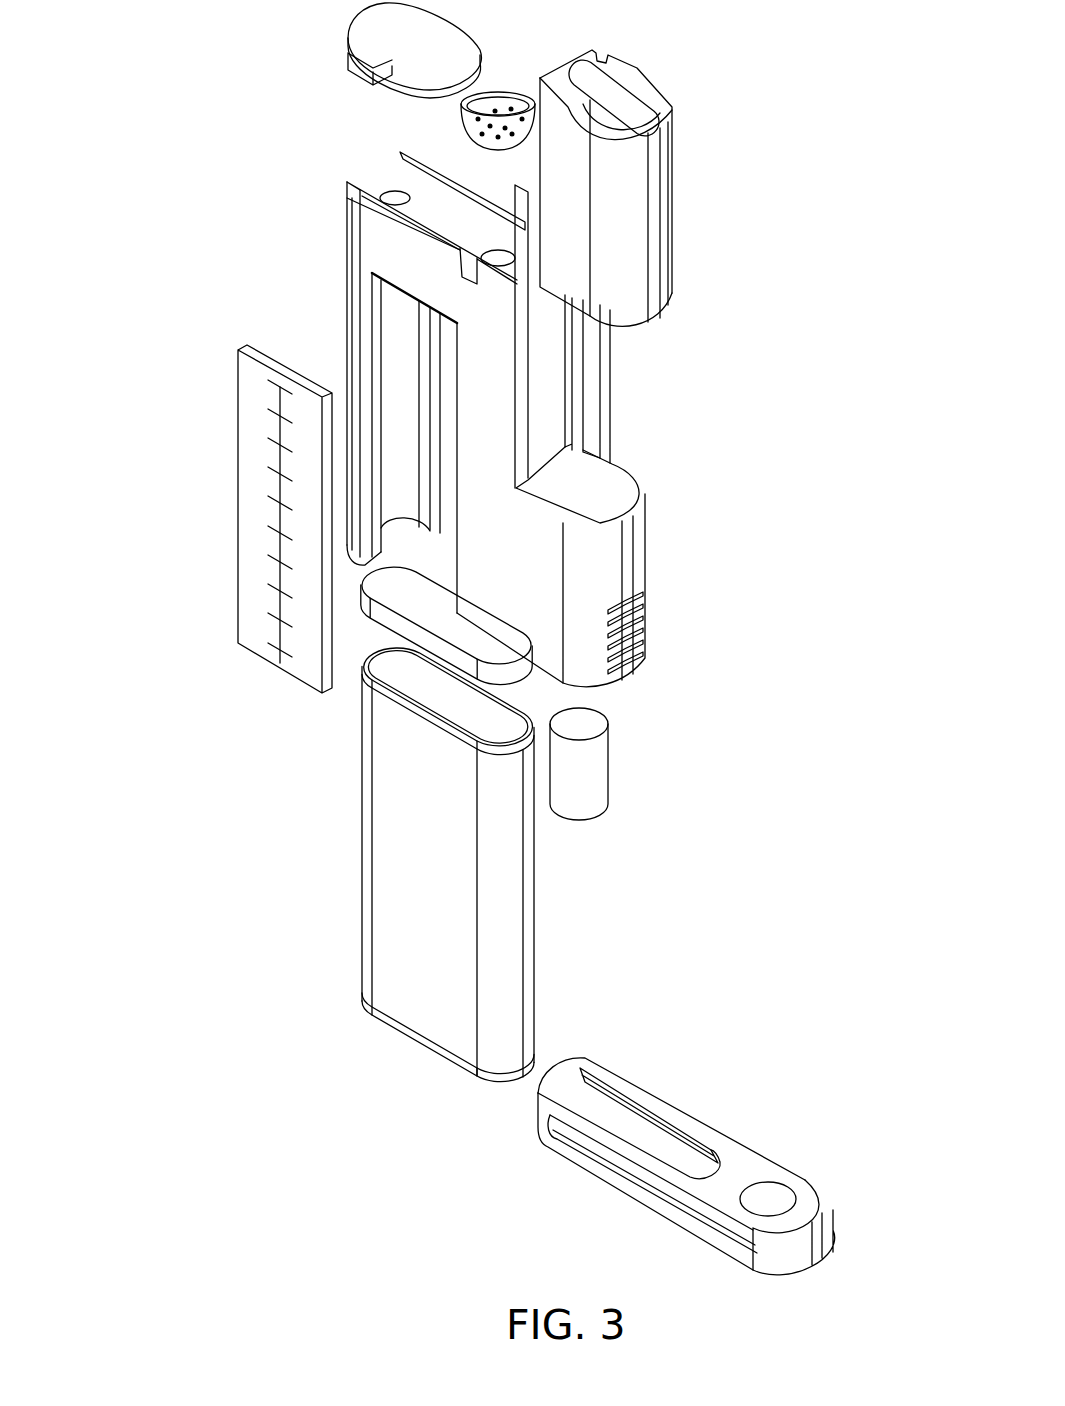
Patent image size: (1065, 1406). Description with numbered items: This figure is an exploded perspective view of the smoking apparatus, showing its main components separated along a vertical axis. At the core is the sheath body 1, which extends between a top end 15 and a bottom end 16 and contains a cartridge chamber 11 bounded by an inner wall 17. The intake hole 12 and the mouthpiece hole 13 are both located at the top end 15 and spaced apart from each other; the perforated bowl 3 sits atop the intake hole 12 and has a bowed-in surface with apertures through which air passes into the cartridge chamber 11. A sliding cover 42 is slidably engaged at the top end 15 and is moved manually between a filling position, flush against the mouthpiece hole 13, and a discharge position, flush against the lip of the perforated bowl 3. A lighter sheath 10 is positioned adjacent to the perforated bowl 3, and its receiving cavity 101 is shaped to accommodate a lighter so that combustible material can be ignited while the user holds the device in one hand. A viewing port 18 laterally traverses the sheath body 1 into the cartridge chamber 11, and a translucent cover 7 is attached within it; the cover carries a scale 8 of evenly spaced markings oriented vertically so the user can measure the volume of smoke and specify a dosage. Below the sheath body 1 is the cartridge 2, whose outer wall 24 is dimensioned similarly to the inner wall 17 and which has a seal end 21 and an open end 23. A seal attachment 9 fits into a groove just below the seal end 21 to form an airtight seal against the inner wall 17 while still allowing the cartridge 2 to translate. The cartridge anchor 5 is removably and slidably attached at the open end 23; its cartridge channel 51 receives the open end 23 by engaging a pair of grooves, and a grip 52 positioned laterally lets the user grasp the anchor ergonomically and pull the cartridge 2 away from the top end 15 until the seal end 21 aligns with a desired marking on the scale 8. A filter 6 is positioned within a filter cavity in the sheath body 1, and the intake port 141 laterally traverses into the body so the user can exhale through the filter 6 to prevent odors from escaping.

The sheath body 1 is at (384, 361).
The cartridge 2 is at (421, 912).
The perforated bowl 3 is at (503, 102).
The cartridge anchor 5 is at (681, 1126).
The filter 6 is at (600, 778).
The translucent cover 7 is at (416, 494).
The scale 8 is at (278, 563).
The seal attachment 9 is at (415, 609).
The lighter sheath 10 is at (662, 188).
The cartridge chamber 11 is at (433, 398).
The intake hole 12 is at (500, 252).
The mouthpiece hole 13 is at (393, 197).
The top end 15 is at (349, 361).
The bottom end 16 is at (620, 581).
The inner wall 17 is at (388, 322).
The viewing port 18 is at (450, 566).
The seal end 21 is at (348, 690).
The open end 23 is at (350, 1036).
The outer wall 24 is at (503, 890).
The sliding cover 42 is at (359, 17).
The cartridge channel 51 is at (638, 1118).
The grip 52 is at (632, 1177).
The receiving cavity 101 is at (618, 98).
The intake port 141 is at (648, 633).